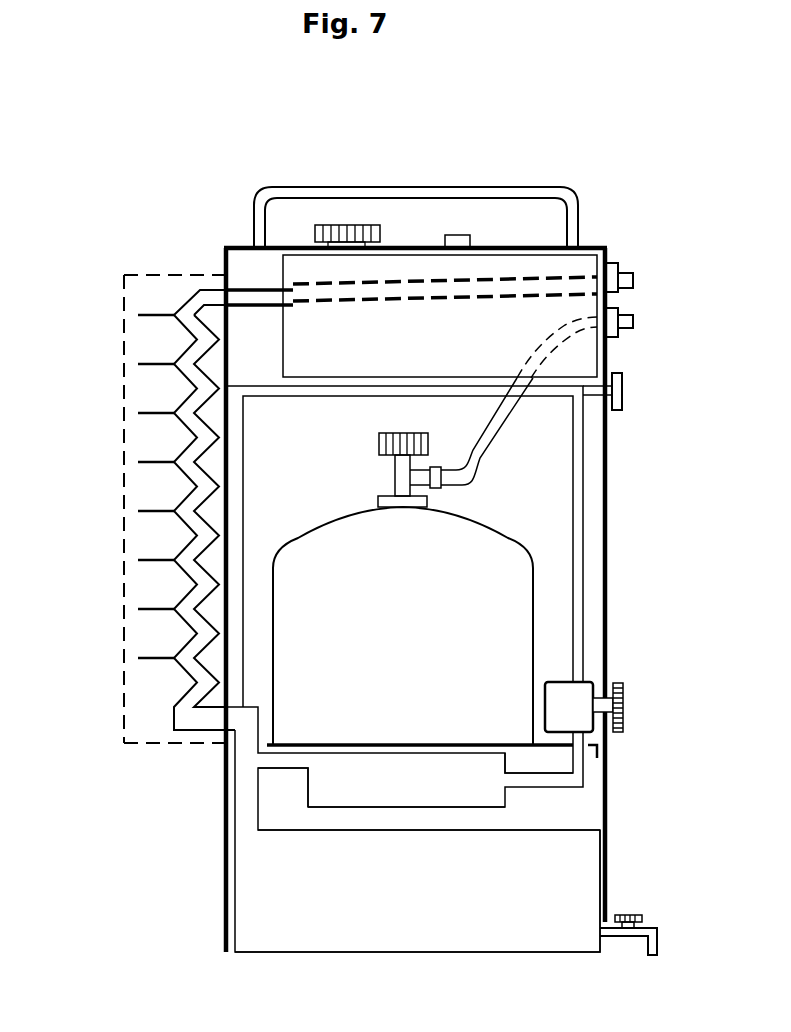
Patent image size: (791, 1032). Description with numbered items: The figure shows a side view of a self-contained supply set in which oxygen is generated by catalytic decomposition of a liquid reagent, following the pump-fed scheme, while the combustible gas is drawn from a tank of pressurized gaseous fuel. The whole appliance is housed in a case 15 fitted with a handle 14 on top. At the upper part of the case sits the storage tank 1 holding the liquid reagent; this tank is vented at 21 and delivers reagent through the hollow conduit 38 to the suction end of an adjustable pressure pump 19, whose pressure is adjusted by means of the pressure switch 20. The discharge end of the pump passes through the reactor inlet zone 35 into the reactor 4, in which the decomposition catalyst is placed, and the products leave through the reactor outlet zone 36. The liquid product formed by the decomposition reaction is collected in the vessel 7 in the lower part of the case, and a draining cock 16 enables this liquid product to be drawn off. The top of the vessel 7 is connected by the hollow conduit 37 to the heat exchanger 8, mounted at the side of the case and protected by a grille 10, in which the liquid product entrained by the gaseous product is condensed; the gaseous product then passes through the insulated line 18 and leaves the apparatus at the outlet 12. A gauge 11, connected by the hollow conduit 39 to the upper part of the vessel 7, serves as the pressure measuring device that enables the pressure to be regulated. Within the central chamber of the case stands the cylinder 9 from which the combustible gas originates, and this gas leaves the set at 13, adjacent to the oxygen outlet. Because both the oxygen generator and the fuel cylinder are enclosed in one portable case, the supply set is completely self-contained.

The storage tank 1 is at (410, 351).
The reactor 4 is at (410, 796).
The vessel 7 is at (411, 907).
The heat exchanger 8 is at (185, 458).
The cylinder 9 is at (396, 643).
The grille 10 is at (124, 278).
The gauge 11 is at (622, 392).
The outlet 12 is at (633, 280).
The combustible gas outlet 13 is at (637, 322).
The handle 14 is at (519, 192).
The case 15 is at (608, 527).
The draining cock 16 is at (645, 916).
The insulated line 18 is at (248, 287).
The adjustable pressure pump 19 is at (583, 693).
The pressure switch 20 is at (625, 711).
The vent 21 is at (453, 235).
The reactor inlet zone 35 is at (518, 778).
The reactor outlet zone 36 is at (287, 762).
The hollow conduit 37 is at (252, 735).
The hollow conduit 38 is at (578, 440).
The hollow conduit 39 is at (238, 472).